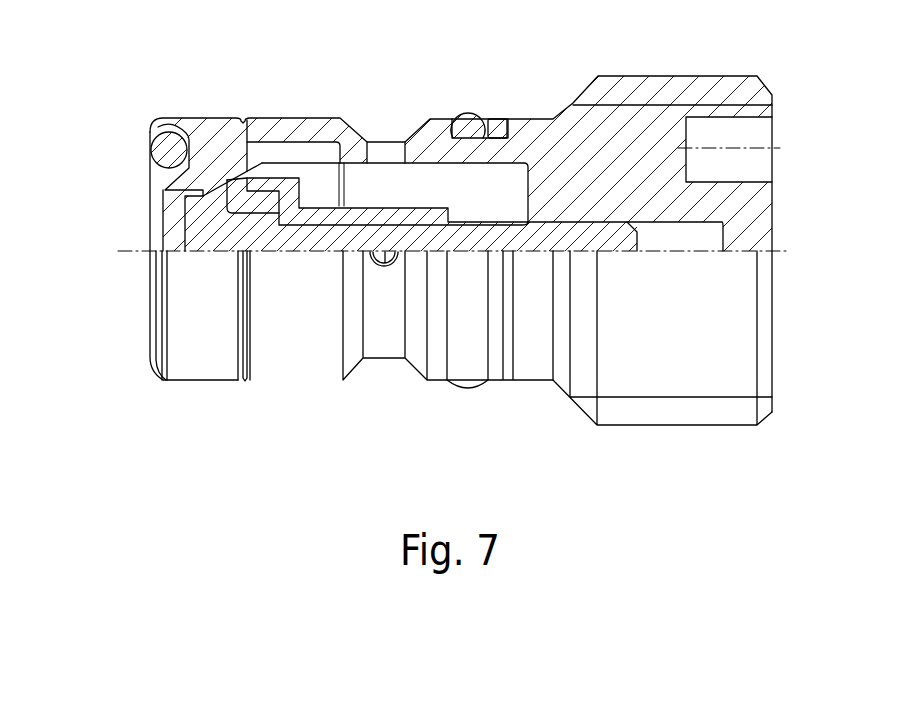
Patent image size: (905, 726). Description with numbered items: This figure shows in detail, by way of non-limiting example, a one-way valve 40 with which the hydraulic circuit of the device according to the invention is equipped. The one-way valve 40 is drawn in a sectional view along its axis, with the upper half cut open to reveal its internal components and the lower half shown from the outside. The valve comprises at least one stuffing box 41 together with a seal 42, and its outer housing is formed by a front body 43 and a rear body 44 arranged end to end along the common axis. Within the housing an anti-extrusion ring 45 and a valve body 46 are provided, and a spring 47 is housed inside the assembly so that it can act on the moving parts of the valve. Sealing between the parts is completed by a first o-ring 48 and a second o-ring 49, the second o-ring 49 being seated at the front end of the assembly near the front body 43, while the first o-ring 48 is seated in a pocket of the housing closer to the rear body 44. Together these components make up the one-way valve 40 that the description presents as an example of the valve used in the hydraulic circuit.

The one-way valve 40 is at (125, 163).
The stuffing box 41 is at (312, 213).
The seal 42 is at (248, 162).
The front body 43 is at (200, 392).
The rear body 44 is at (543, 388).
The anti-extrusion ring 45 is at (506, 116).
The valve body 46 is at (193, 186).
The spring 47 is at (387, 160).
The first o-ring 48 is at (463, 107).
The second o-ring 49 is at (152, 137).